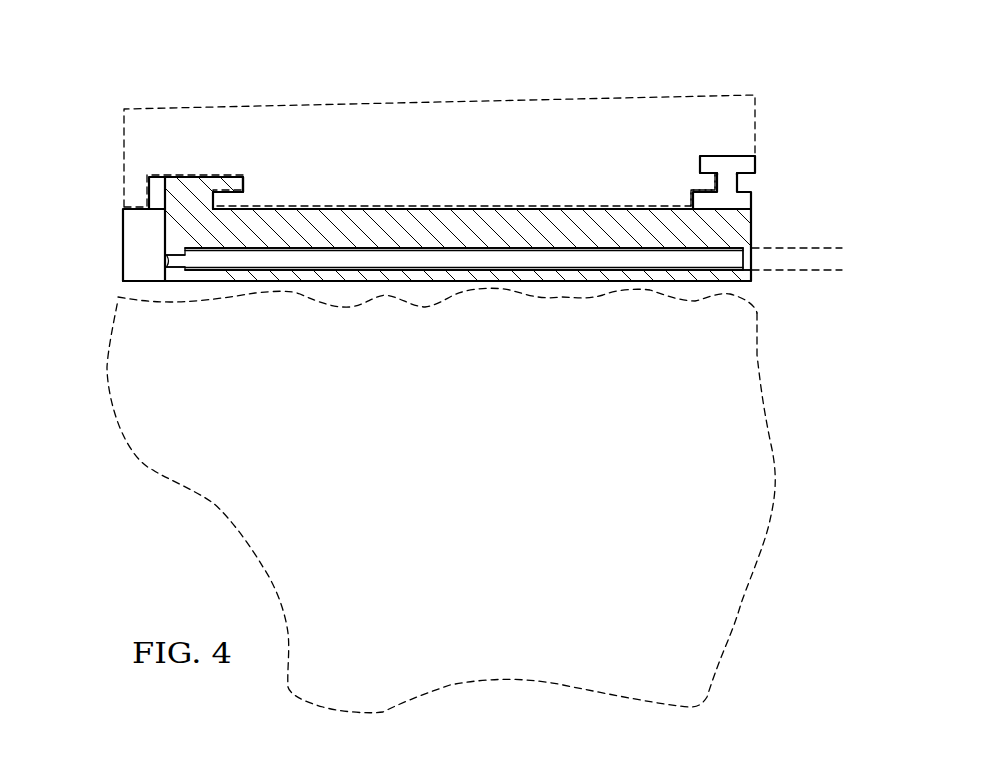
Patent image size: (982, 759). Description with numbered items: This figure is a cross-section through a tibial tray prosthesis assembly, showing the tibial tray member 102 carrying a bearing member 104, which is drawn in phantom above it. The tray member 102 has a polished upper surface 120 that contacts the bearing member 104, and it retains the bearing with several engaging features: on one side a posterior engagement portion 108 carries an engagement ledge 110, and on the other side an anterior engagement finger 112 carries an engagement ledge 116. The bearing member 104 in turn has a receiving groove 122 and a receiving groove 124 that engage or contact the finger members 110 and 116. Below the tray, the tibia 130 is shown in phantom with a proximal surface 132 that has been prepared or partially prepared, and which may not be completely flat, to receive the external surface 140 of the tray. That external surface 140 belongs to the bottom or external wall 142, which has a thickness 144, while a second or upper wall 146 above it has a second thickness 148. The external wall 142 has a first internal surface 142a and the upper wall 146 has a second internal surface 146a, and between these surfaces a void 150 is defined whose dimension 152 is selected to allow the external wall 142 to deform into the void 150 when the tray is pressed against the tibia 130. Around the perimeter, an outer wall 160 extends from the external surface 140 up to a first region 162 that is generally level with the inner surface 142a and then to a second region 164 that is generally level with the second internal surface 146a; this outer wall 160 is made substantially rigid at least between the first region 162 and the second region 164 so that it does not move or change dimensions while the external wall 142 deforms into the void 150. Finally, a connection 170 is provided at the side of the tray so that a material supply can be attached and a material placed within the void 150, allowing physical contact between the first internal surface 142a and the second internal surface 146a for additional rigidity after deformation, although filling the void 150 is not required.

The tibial tray member 102 is at (121, 246).
The bearing member 104 is at (411, 100).
The posterior engagement portion 108 is at (161, 189).
The engagement ledge 110 is at (221, 176).
The anterior engagement finger 112 is at (739, 185).
The engagement ledge 116 is at (707, 167).
The upper surface 120 is at (358, 207).
The receiving groove 122 is at (246, 178).
The receiving groove 124 is at (695, 166).
The tibia 130 is at (806, 464).
The proximal surface 132 is at (756, 311).
The external surface 140 is at (532, 283).
The external wall 142 is at (660, 283).
The first internal surface 142a is at (600, 272).
The thickness 144 is at (463, 237).
The upper wall 146 is at (577, 220).
The second internal surface 146a is at (546, 254).
The second thickness 148 is at (376, 210).
The void 150 is at (294, 250).
The dimension 152 is at (423, 226).
The outer wall 160 is at (752, 262).
The first region 162 is at (779, 262).
The second region 164 is at (779, 262).
The connection 170 is at (166, 258).